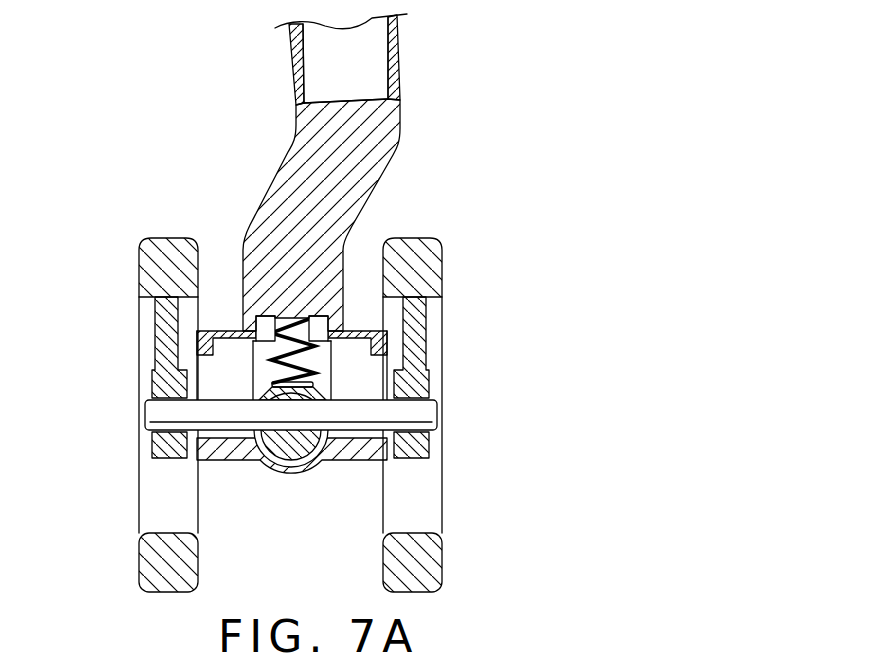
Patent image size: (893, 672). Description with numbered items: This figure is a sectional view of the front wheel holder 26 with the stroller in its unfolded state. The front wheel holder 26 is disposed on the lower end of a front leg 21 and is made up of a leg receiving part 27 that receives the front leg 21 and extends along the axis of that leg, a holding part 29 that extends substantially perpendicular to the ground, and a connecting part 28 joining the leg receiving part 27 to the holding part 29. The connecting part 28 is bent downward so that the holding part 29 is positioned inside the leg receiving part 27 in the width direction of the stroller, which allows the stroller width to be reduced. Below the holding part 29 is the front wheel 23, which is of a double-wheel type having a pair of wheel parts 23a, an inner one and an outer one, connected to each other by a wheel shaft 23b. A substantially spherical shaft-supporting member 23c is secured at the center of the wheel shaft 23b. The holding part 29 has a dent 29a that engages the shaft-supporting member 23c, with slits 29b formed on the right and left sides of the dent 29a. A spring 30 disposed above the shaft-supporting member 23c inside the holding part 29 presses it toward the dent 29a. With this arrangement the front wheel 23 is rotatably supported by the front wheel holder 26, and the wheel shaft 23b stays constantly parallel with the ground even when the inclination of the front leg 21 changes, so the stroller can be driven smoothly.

The front leg 21 is at (368, 44).
The front wheel holder 26 is at (284, 79).
The leg receiving part 27 is at (399, 76).
The connecting part 28 is at (300, 152).
The holding part 29 is at (326, 366).
The dent 29a is at (304, 452).
The slits 29b is at (220, 378).
The spring 30 is at (254, 368).
The front wheel 23 is at (452, 567).
The wheel parts 23a is at (147, 265).
The wheel shaft 23b is at (424, 412).
The shaft-supporting member 23c is at (278, 450).